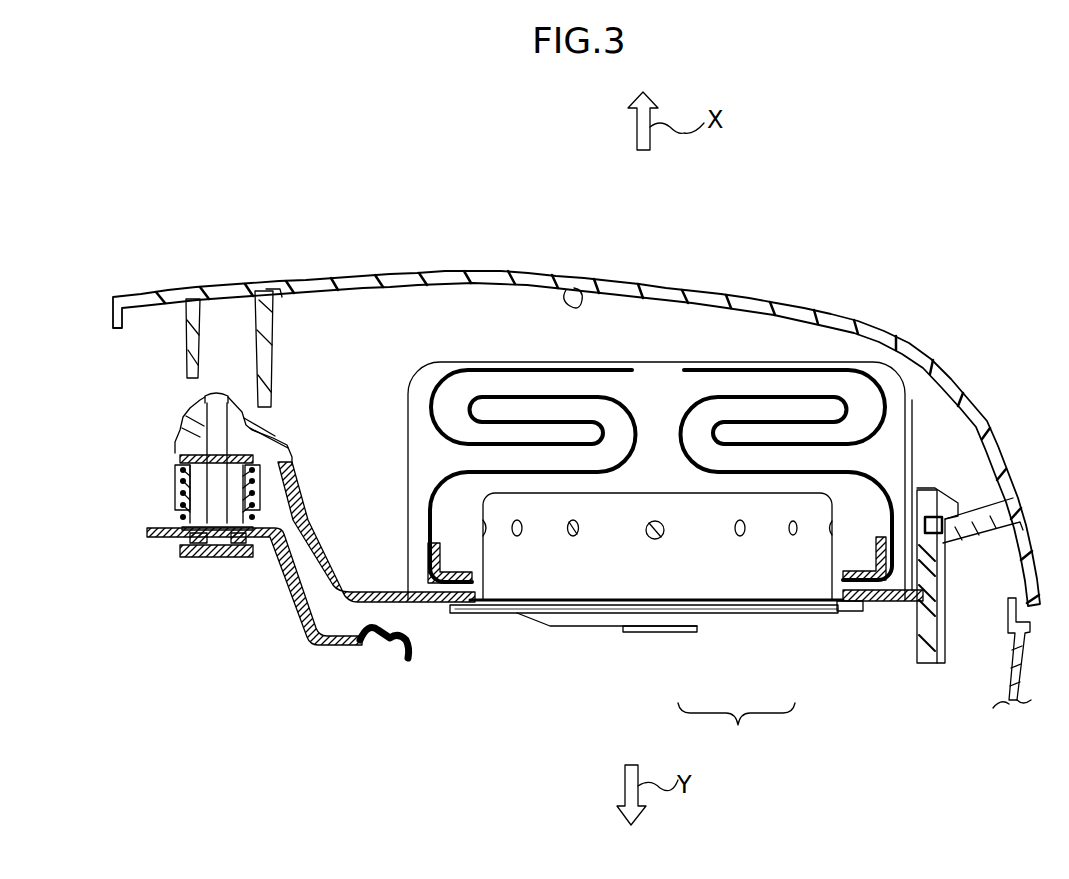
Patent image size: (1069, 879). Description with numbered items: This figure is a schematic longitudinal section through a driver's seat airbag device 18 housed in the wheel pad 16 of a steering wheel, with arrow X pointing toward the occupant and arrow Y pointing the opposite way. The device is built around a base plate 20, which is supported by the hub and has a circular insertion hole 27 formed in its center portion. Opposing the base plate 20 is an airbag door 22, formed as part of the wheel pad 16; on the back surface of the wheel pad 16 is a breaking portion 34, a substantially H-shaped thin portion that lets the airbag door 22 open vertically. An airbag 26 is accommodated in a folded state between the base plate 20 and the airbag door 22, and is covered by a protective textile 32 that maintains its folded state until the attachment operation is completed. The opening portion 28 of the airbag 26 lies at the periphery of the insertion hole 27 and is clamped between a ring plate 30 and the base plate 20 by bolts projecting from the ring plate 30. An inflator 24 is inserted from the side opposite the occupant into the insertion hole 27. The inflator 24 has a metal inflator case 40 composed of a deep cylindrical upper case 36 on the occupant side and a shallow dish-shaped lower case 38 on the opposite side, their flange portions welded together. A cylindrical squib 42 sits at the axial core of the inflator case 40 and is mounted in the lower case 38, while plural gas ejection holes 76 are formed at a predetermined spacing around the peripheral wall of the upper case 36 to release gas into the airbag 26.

The wheel pad 16 is at (576, 417).
The driver's seat airbag device 18 is at (576, 407).
The airbag door 22 is at (723, 293).
The breaking portion 34 is at (568, 292).
The airbag 26 is at (870, 378).
The protective textile 32 is at (907, 417).
The gas ejection holes 76 is at (657, 523).
The ring plate 30 is at (873, 570).
The base plate 20 is at (410, 606).
The inflator 24 is at (592, 638).
The squib 42 is at (668, 636).
The lower case 38 is at (730, 617).
The upper case 36 is at (768, 580).
The opening portion 28 is at (843, 585).
The insertion hole 27 is at (835, 608).
The inflator case 40 is at (736, 732).